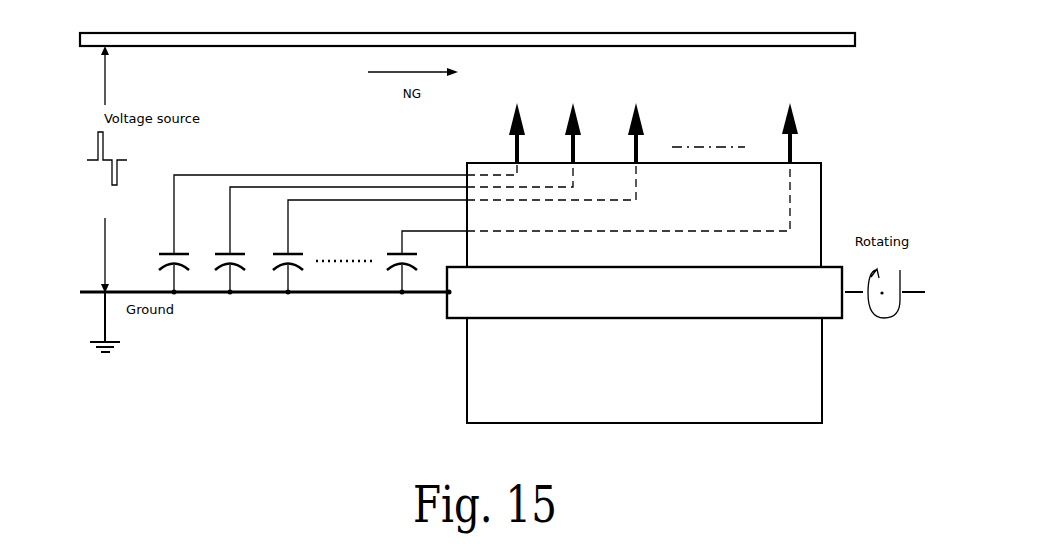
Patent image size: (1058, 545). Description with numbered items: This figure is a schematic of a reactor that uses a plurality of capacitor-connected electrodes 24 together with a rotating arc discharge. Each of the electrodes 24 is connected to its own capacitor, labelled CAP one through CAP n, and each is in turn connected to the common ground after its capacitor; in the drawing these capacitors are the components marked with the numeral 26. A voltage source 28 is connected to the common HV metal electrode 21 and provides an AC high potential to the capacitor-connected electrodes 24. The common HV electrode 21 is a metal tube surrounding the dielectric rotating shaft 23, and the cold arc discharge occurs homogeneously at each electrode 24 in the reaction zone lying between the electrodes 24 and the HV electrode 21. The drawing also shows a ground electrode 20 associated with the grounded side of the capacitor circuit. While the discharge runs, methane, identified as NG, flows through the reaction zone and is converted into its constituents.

The ground electrode 20 is at (823, 306).
The common HV metal electrode 21 is at (403, 40).
The dielectric rotating shaft 23 is at (812, 182).
The electrodes 24 is at (507, 130).
The capacitors 26 is at (186, 268).
The voltage source 28 is at (102, 162).